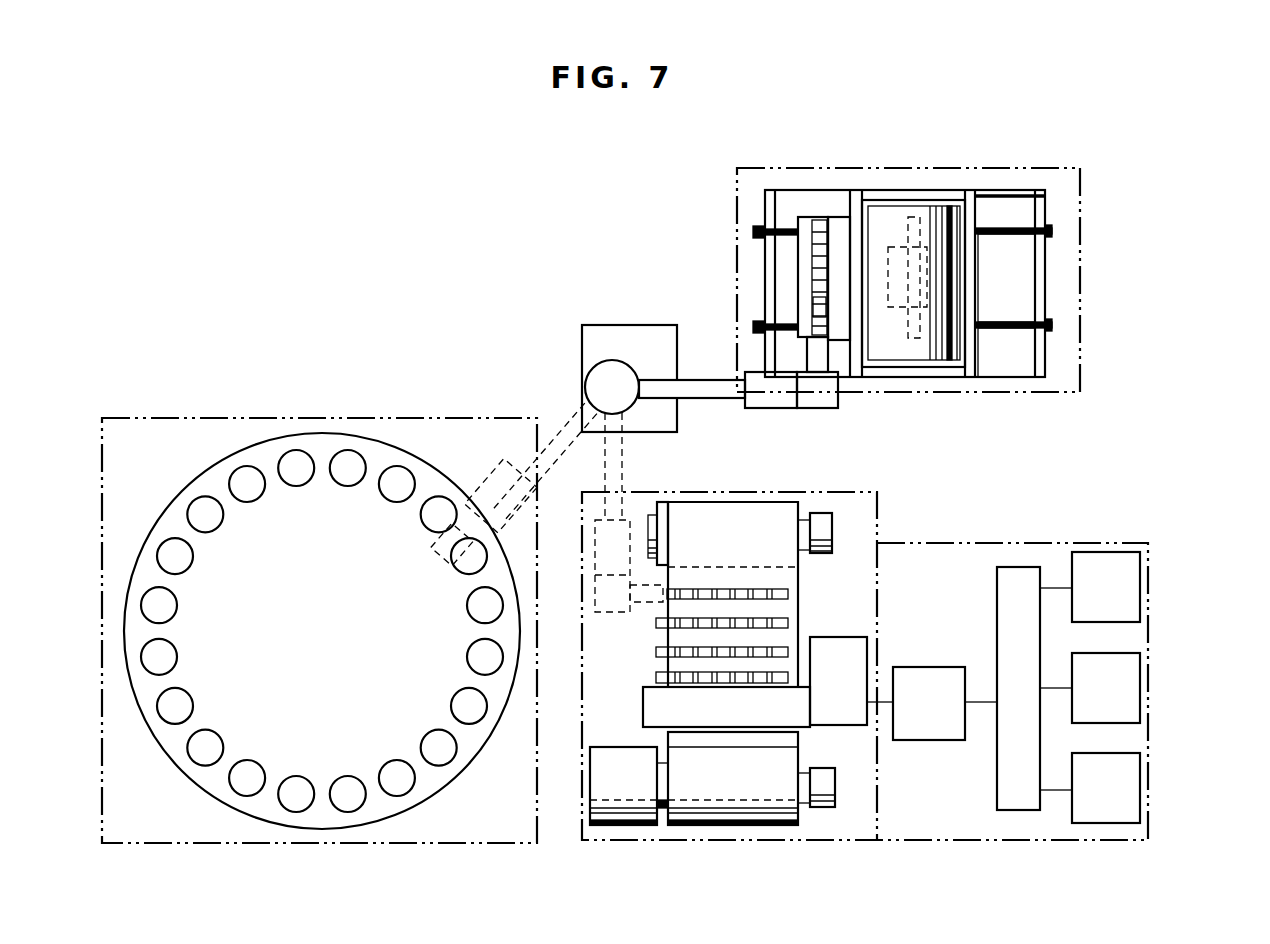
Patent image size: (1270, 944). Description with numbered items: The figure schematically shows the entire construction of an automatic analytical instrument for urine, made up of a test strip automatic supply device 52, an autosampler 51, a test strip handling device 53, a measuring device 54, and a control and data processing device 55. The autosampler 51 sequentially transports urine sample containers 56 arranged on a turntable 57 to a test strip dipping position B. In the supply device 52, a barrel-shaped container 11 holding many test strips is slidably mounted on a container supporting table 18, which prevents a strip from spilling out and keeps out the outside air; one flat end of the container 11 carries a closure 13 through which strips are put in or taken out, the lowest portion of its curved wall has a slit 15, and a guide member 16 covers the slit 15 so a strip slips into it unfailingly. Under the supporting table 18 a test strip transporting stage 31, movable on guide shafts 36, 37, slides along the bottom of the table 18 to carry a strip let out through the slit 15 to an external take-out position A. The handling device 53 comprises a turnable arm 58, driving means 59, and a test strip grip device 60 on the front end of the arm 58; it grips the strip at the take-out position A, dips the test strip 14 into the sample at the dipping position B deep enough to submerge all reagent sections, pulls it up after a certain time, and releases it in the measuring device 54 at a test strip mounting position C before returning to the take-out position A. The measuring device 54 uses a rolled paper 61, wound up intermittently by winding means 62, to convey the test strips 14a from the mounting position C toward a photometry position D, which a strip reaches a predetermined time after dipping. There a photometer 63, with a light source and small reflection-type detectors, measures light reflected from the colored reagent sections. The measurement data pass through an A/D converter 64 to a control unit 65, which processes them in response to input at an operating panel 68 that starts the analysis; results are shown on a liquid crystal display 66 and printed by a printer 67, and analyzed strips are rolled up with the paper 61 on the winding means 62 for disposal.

The autosampler 51 is at (206, 410).
The urine sample containers 56 is at (345, 458).
The turntable 57 is at (264, 797).
The test strip dipping position B is at (429, 518).
The test strip handling device 53 is at (621, 312).
The driving means 59 is at (585, 343).
The turnable arm 58 is at (708, 398).
The test strip grip device 60 is at (822, 400).
The test strip automatic supply device 52 is at (796, 160).
The container supporting table 18 is at (975, 212).
The guide shaft 36 is at (1002, 240).
The guide shaft 37 is at (1003, 328).
The test strip transporting stage 31 is at (837, 223).
The test strip 14 is at (812, 267).
The external take-out position A is at (812, 307).
The barrel-shaped container 11 is at (890, 222).
The slit 15 is at (930, 227).
The closure 13 is at (950, 372).
The guide member 16 is at (893, 307).
The measuring device 54 is at (768, 845).
The rolled paper 61 is at (752, 507).
The test strip mounting position C is at (776, 590).
The test strips 14a is at (772, 620).
The photometry position D is at (650, 710).
The photometer 63 is at (850, 726).
The winding means 62 is at (612, 828).
The control and data processing device 55 is at (1148, 805).
The A/D converter 64 is at (923, 667).
The control unit 65 is at (1015, 567).
The printer 67 is at (1098, 552).
The liquid crystal display 66 is at (1140, 686).
The operating panel 68 is at (1108, 825).